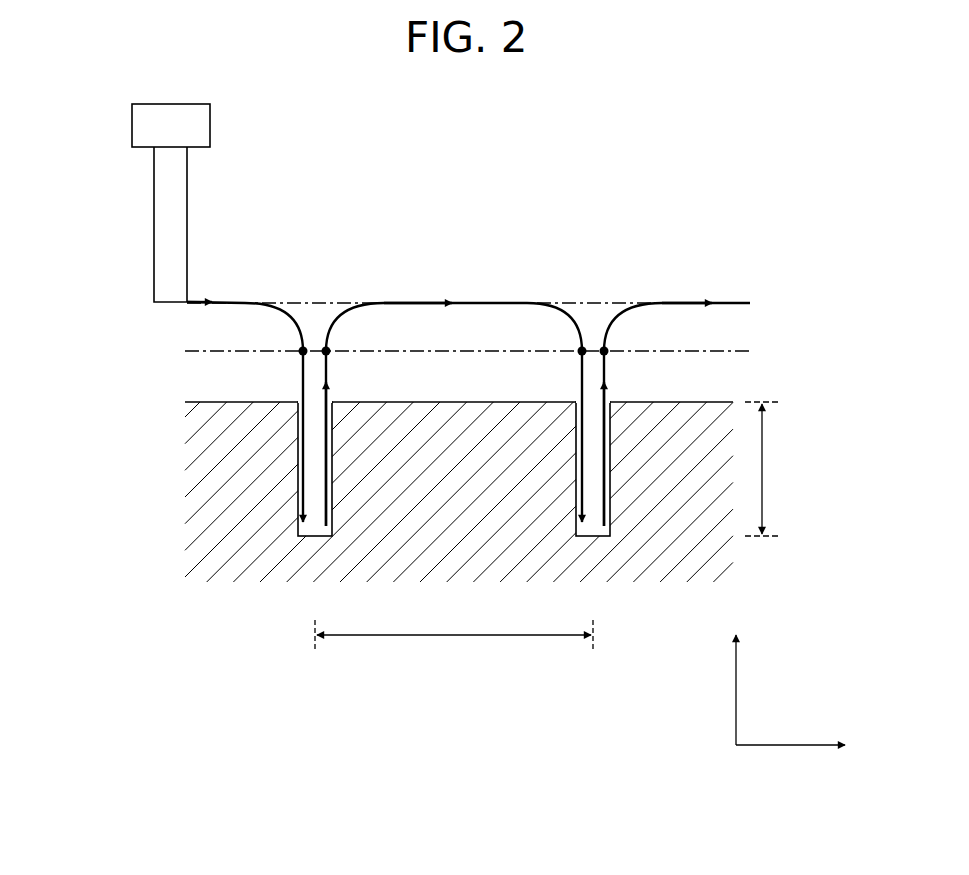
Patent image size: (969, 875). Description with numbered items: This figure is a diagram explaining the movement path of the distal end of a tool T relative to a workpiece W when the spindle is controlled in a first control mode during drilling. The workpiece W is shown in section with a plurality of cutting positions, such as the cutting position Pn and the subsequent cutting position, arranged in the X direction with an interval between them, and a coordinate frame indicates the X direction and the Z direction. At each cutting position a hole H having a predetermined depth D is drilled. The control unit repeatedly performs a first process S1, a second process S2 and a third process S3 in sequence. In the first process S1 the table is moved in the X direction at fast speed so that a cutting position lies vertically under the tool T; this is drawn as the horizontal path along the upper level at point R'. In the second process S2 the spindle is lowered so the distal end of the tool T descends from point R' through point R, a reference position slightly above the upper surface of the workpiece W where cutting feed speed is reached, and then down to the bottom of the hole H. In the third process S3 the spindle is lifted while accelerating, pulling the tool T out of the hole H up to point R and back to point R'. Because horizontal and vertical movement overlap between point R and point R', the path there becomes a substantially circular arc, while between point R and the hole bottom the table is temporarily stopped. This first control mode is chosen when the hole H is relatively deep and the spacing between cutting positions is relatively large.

The tool T is at (154, 204).
The workpiece W is at (190, 510).
The hole H is at (298, 458).
The first process S1 is at (468, 311).
The second process S2 is at (426, 436).
The third process S3 is at (485, 438).
The point R (reference position) R is at (480, 353).
The point R' is at (484, 305).
The predetermined depth D is at (766, 469).
The cutting position (first cutting position) Pn is at (315, 622).
The Z direction Z is at (722, 685).
The X direction X is at (800, 748).